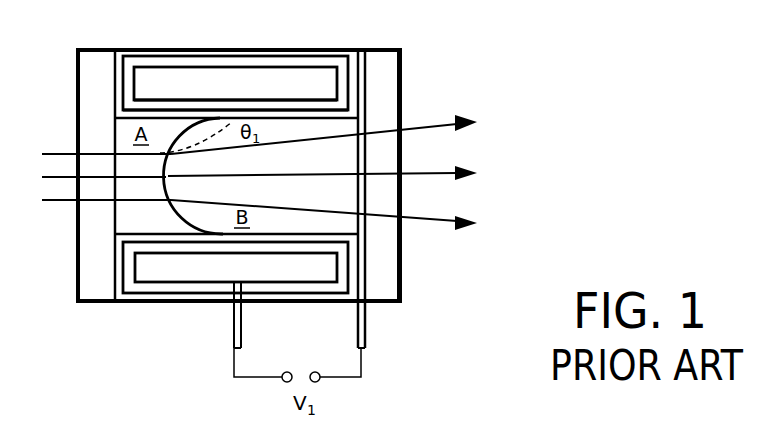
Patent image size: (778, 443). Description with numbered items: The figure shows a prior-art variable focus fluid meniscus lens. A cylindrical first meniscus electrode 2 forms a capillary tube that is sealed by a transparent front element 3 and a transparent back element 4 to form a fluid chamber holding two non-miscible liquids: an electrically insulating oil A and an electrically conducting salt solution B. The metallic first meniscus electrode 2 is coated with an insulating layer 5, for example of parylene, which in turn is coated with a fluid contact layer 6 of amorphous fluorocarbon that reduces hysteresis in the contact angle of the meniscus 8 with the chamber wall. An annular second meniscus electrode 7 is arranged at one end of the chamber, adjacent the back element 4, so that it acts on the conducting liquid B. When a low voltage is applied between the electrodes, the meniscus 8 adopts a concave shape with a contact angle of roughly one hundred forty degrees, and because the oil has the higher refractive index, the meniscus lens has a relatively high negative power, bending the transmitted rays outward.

The first meniscus electrode 2 is at (287, 77).
The transparent front element 3 is at (87, 62).
The transparent back element 4 is at (383, 57).
The insulating layer 5 is at (155, 103).
The fluid contact layer 6 is at (193, 113).
The second meniscus electrode 7 is at (365, 242).
The meniscus 8 is at (188, 220).